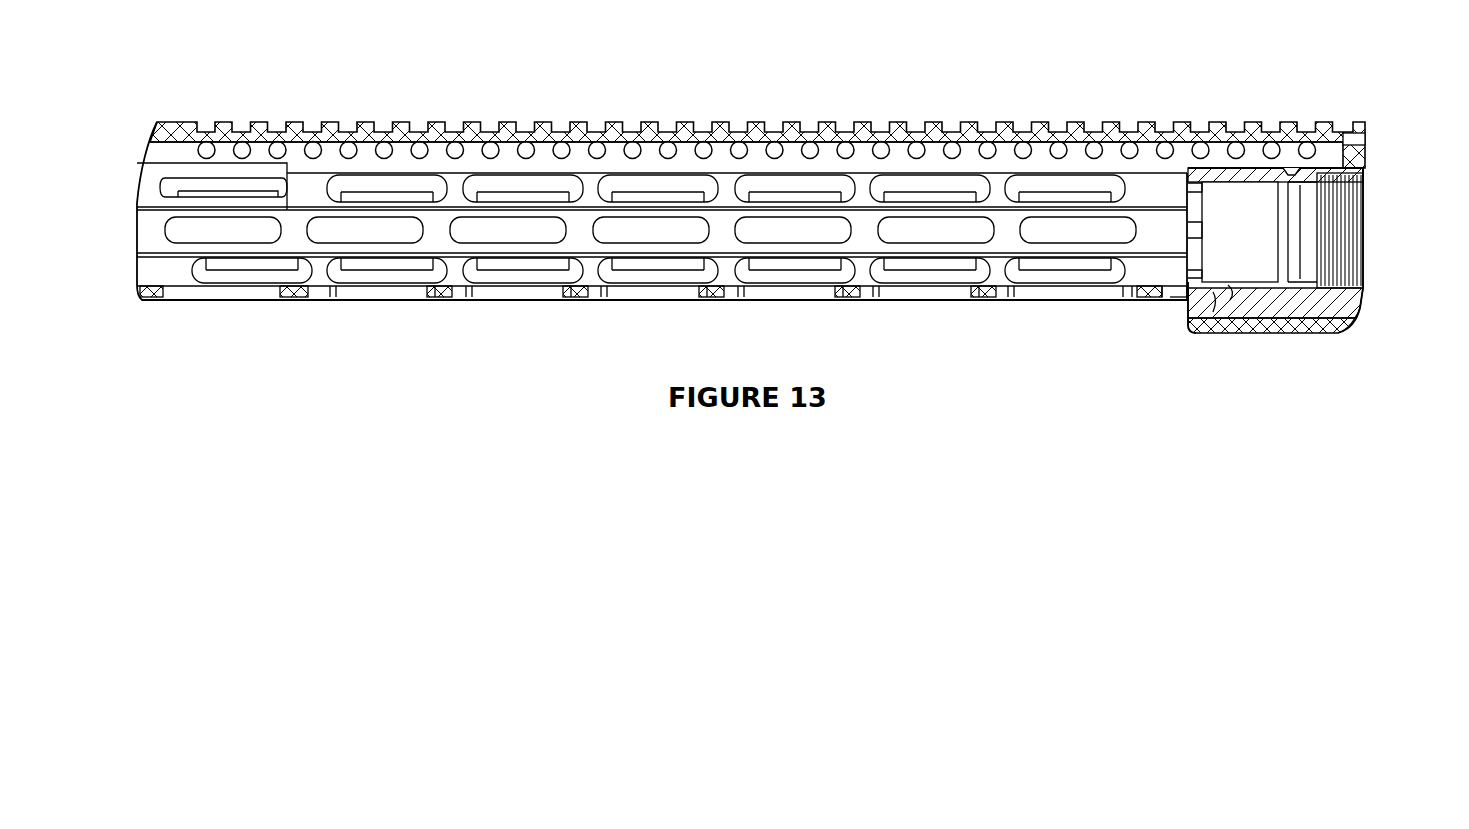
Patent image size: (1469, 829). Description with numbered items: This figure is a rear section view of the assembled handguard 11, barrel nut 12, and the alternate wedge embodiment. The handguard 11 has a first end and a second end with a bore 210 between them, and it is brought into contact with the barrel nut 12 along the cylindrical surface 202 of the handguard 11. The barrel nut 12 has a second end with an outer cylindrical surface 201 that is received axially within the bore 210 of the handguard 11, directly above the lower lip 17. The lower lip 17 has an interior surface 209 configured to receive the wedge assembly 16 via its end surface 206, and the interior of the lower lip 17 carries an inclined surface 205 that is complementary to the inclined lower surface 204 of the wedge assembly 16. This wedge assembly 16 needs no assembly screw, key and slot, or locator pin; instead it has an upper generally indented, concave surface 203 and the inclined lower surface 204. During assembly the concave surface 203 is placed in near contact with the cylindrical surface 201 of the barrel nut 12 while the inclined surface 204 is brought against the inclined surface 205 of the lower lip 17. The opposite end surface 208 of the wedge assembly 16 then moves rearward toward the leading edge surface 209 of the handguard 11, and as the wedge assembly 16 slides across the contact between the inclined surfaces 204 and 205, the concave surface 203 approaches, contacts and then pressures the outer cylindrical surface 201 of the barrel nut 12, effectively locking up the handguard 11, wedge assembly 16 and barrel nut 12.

The handguard 11 is at (1062, 146).
The barrel nut 12 is at (1283, 222).
The wedge assembly 16 is at (1297, 310).
The lower lip 17 is at (1297, 328).
The outer cylindrical surface 201 is at (1232, 282).
The cylindrical surface 202 is at (1178, 290).
The concave surface 203 is at (1215, 300).
The inclined lower surface 204 is at (1192, 300).
The inclined surface 205 is at (1186, 306).
The end surface 206 is at (1182, 302).
The opposite end surface 208 is at (1362, 306).
The leading edge surface 209 is at (1357, 322).
The bore 210 is at (1130, 301).